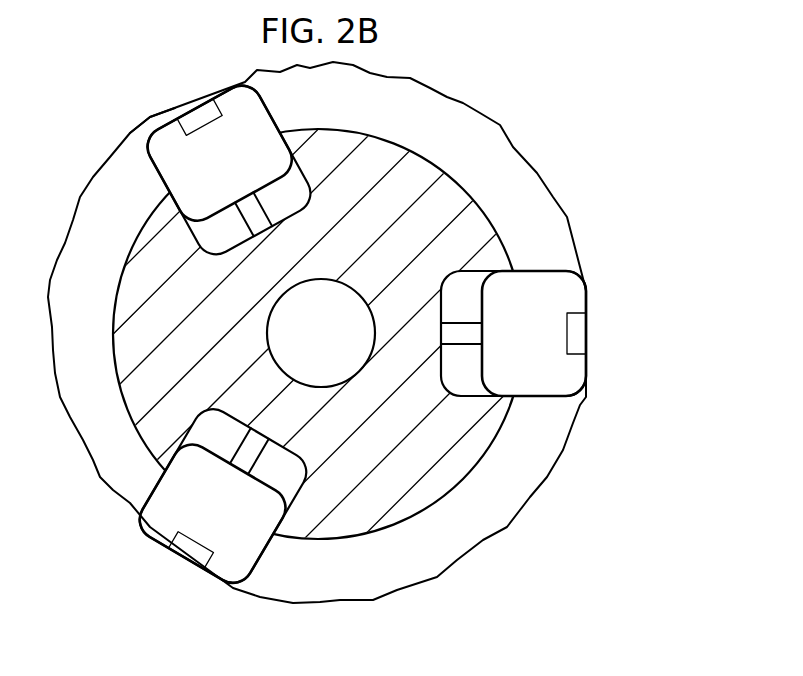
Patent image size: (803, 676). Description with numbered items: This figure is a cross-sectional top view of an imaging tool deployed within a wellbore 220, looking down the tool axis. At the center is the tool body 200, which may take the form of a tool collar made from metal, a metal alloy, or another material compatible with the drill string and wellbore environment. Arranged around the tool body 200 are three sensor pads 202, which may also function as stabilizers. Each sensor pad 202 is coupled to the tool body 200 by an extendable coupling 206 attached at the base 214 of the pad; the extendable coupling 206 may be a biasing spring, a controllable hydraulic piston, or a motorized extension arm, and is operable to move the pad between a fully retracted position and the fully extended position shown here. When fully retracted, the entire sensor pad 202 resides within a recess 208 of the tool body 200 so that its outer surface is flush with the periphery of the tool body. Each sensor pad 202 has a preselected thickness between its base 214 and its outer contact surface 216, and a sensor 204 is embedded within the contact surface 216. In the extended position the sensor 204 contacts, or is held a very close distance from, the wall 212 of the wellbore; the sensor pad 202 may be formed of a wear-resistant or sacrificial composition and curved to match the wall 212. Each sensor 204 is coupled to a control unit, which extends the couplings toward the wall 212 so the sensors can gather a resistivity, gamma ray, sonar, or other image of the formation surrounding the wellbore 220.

The tool body 200 is at (418, 167).
The sensor pad 202 is at (160, 186).
The sensor 204 is at (201, 111).
The extendable coupling 206 is at (266, 192).
The recess 208 is at (217, 222).
The wall of the wellbore 212 is at (513, 150).
The base 214 is at (474, 303).
The contact surface 216 is at (153, 118).
The wellbore 220 is at (301, 347).